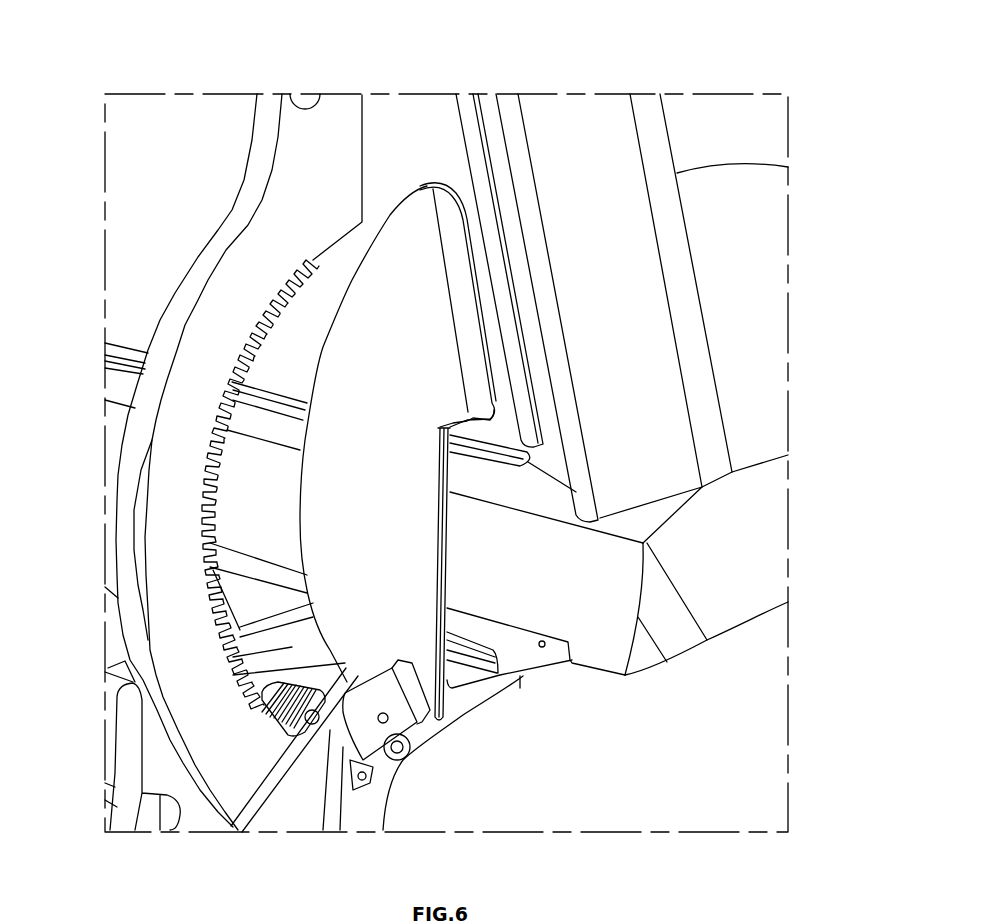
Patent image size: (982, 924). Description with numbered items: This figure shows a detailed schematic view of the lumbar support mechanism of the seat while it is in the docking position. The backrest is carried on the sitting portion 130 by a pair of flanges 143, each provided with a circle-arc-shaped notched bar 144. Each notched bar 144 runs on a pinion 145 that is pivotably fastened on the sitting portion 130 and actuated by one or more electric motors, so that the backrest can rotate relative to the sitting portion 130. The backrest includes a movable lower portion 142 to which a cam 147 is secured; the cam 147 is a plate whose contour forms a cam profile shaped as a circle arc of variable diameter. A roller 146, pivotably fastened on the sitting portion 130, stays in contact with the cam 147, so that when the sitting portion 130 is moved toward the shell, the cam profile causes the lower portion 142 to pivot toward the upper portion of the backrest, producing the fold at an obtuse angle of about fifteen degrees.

The sitting portion 130 is at (708, 572).
The lower portion 142 is at (607, 238).
The flanges 143 is at (222, 299).
The notched bars 144 is at (281, 288).
The pinions 145 is at (265, 718).
The roller 146 is at (362, 690).
The cam 147 is at (418, 230).